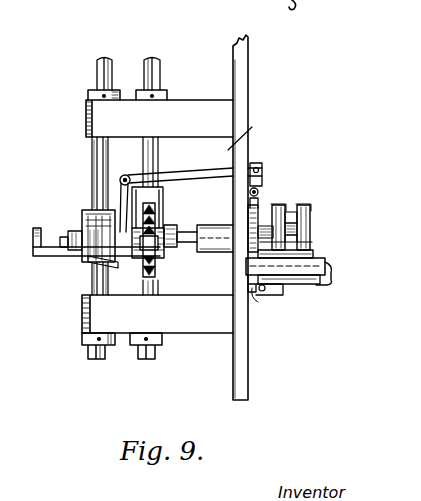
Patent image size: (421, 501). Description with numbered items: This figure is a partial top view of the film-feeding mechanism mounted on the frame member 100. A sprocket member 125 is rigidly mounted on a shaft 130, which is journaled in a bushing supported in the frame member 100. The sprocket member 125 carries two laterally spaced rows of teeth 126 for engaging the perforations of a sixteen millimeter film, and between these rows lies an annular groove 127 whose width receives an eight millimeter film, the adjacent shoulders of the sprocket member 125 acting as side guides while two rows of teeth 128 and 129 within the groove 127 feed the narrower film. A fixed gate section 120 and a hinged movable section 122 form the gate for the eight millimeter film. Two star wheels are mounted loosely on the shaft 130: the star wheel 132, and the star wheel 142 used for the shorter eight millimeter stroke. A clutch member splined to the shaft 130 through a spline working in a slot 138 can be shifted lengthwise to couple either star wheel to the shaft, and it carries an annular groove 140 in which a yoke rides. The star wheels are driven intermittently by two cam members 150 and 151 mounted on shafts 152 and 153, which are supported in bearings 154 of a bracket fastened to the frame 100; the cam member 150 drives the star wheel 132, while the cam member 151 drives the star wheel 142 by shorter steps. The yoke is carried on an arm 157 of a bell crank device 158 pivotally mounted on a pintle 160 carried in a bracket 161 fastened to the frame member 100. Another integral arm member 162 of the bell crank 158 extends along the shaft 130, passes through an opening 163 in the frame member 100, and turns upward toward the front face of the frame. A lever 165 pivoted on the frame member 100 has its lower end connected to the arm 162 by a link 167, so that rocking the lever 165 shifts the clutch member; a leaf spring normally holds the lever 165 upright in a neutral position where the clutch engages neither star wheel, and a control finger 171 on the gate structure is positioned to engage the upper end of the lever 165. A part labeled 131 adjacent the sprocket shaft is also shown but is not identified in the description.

The frame member 100 is at (240, 387).
The fixed gate section 120 is at (330, 273).
The movable gate section 122 is at (302, 285).
The sprocket member 125 is at (308, 250).
The teeth 126 is at (282, 222).
The annular groove 127 is at (292, 203).
The row of teeth 128 is at (290, 229).
The row of teeth 129 is at (300, 236).
The shaft 130 is at (66, 236).
The shaft 131 is at (218, 253).
The star wheel 132 is at (100, 207).
The slot 138 is at (108, 298).
The annular groove 140 is at (96, 262).
The star wheel 142 is at (148, 276).
The cam member 150 is at (72, 252).
The cam member 151 is at (190, 226).
The shaft 152 is at (107, 61).
The shaft 153 is at (160, 66).
The bearings 154 is at (92, 122).
The arm 157 is at (117, 192).
The bell crank device 158 is at (122, 175).
The pintle 160 is at (140, 185).
The bracket 161 is at (252, 136).
The arm member 162 is at (226, 152).
The opening 163 is at (250, 160).
The lever 165 is at (262, 218).
The link 167 is at (258, 200).
The control finger 171 is at (256, 298).